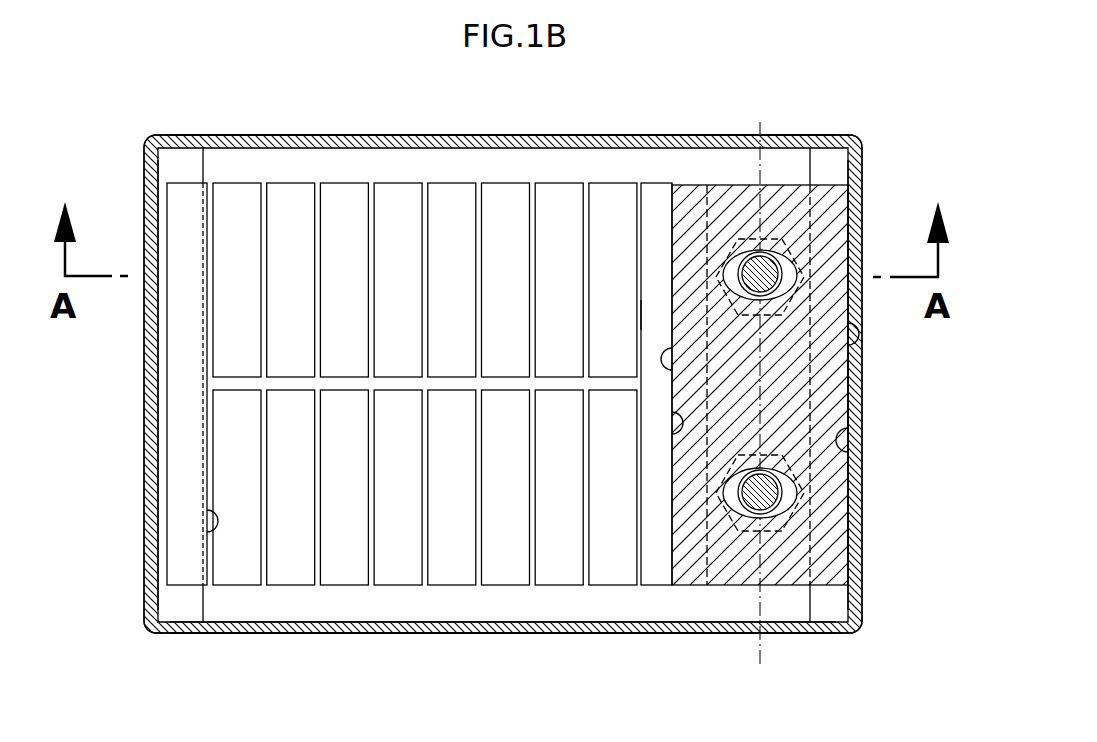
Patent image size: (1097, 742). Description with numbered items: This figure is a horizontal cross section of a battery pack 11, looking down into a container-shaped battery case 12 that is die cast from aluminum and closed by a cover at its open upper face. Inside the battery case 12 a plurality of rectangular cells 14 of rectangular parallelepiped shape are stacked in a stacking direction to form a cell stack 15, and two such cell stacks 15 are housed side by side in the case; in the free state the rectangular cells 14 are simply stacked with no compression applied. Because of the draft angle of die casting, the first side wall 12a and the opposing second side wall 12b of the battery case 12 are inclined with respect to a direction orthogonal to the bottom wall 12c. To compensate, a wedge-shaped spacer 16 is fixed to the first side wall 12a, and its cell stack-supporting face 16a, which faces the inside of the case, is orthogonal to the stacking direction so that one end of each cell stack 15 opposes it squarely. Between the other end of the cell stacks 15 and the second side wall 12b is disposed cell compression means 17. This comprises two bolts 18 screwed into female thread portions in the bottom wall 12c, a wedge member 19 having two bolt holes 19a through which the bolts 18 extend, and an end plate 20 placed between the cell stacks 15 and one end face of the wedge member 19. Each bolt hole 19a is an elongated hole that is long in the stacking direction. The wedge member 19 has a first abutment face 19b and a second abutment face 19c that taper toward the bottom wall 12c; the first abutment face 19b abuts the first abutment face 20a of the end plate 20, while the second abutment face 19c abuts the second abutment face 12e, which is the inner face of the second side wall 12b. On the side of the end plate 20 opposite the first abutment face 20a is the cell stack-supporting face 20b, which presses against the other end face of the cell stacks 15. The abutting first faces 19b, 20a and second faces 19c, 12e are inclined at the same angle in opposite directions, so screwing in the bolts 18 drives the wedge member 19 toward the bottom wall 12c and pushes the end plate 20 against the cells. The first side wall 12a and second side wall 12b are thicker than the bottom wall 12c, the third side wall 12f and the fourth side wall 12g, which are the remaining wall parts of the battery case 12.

The battery pack 11 is at (387, 106).
The battery case 12 is at (258, 130).
The first side wall 12a is at (144, 358).
The second side wall 12b is at (860, 390).
The bottom wall 12c is at (350, 606).
The second abutment face 12e is at (848, 458).
The third side wall 12f is at (445, 135).
The fourth side wall 12g is at (660, 633).
The rectangular cell 14 is at (625, 495).
The cell stack 15 is at (425, 378).
The spacer 16 is at (158, 455).
The cell stack-supporting face 16a is at (207, 530).
The cell compression means 17 is at (715, 161).
The bolt 18 is at (790, 258).
The wedge member 19 is at (764, 341).
The bolt hole 19a is at (738, 257).
The first abutment face 19b is at (672, 357).
The second abutment face 19c is at (850, 340).
The end plate 20 is at (629, 559).
The first abutment face 20a is at (672, 437).
The cell stack-supporting face 20b is at (641, 315).